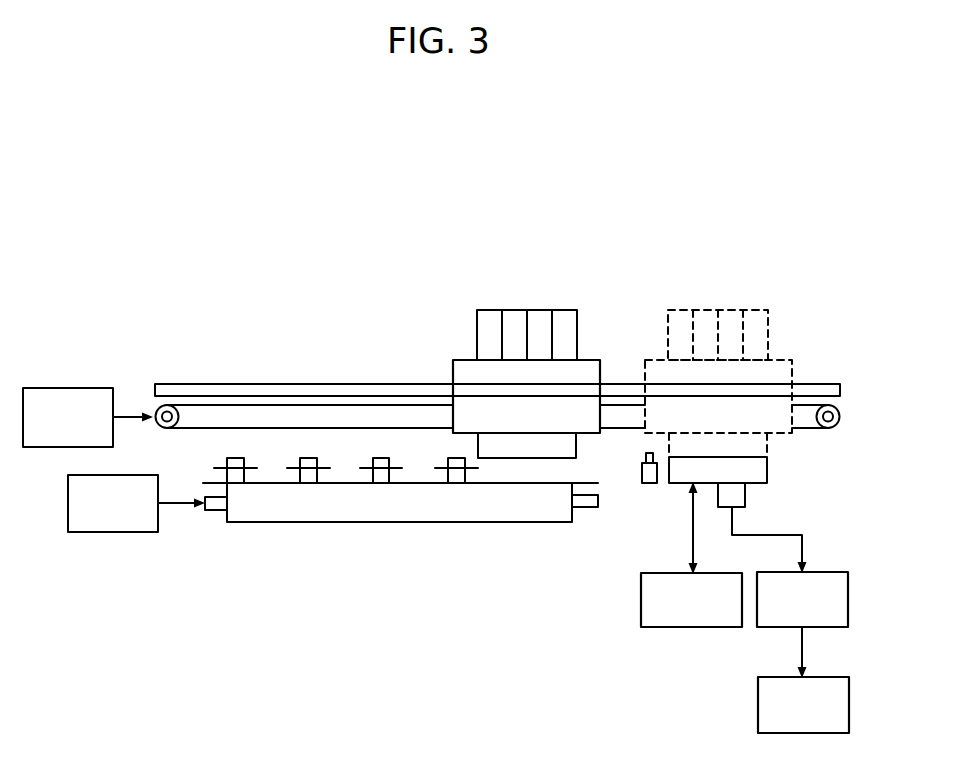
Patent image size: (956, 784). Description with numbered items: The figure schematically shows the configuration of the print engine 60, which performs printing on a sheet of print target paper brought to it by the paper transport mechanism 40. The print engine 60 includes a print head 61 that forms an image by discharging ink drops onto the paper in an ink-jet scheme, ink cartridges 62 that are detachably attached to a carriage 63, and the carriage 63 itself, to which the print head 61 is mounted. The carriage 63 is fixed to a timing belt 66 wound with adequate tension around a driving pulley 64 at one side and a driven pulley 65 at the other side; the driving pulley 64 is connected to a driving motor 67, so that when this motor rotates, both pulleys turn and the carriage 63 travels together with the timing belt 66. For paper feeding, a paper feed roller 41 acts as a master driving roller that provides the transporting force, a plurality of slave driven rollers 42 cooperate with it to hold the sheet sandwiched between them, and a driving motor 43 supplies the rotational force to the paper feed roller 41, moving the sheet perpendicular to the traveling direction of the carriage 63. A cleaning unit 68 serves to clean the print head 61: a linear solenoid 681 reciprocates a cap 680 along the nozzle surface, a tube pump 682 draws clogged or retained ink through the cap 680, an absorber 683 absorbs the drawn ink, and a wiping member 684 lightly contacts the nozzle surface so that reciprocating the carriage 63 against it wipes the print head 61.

The paper transport mechanism 40 is at (400, 545).
The paper feed roller 41 is at (267, 522).
The slave driven rollers 42 is at (455, 483).
The driving motor 43 is at (160, 523).
The print engine 60 is at (720, 274).
The print head 61 is at (576, 443).
The ink cartridges 62 is at (560, 310).
The carriage 63 is at (453, 372).
The driving pulley 64 is at (155, 405).
The driven pulley 65 is at (840, 404).
The timing belt 66 is at (322, 403).
The driving motor 67 is at (81, 388).
The cleaning unit 68 is at (547, 583).
The cap 680 is at (670, 484).
The linear solenoid 681 is at (660, 628).
The tube pump 682 is at (770, 630).
The absorber 683 is at (758, 705).
The wiping member 684 is at (641, 465).